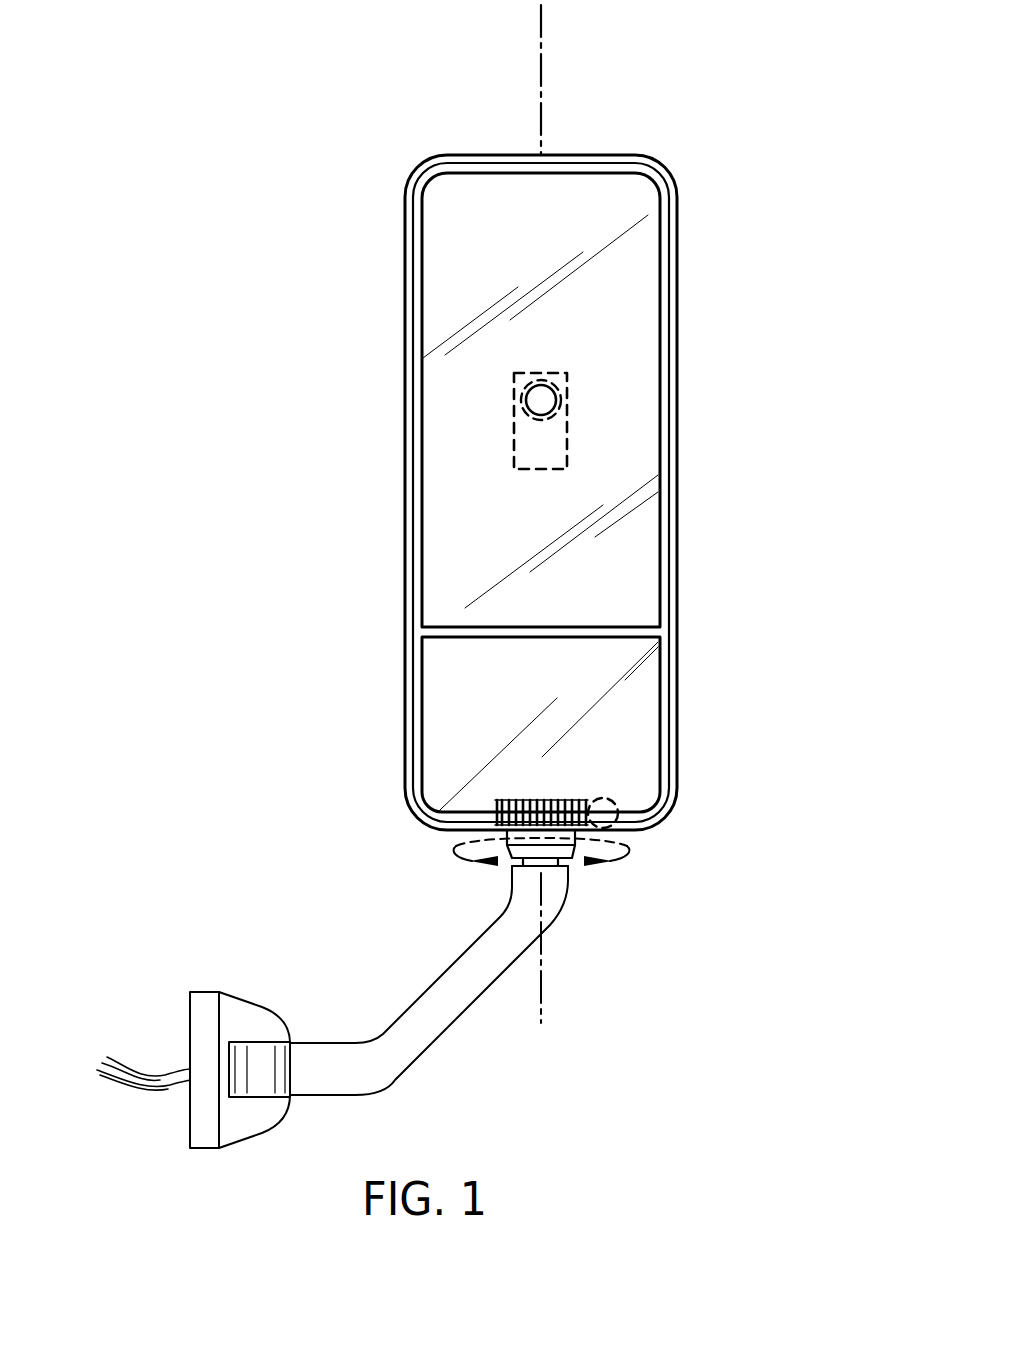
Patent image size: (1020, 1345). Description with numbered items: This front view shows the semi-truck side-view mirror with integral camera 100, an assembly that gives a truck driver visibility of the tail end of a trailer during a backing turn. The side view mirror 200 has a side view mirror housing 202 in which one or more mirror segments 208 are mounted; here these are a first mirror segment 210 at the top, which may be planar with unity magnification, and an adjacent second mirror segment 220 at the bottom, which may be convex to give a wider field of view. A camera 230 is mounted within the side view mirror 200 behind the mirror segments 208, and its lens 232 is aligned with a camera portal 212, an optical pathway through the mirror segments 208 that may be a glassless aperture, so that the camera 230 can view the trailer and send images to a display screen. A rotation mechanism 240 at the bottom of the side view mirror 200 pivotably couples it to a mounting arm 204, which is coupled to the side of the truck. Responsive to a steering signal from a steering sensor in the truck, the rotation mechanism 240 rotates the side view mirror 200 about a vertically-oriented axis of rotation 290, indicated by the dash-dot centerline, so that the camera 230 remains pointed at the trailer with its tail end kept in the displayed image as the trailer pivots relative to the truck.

The semi-truck side-view mirror with integral camera 100 is at (126, 208).
The side view mirror 200 is at (801, 820).
The side view mirror housing 202 is at (405, 327).
The mounting arm 204 is at (427, 1033).
The mirror segments 208 is at (442, 677).
The first mirror segment 210 is at (457, 549).
The camera portal 212 is at (556, 410).
The second mirror segment 220 is at (442, 716).
The camera 230 is at (514, 446).
The lens 232 is at (535, 400).
The rotation mechanism 240 is at (497, 801).
The axis of rotation 290 is at (541, 80).